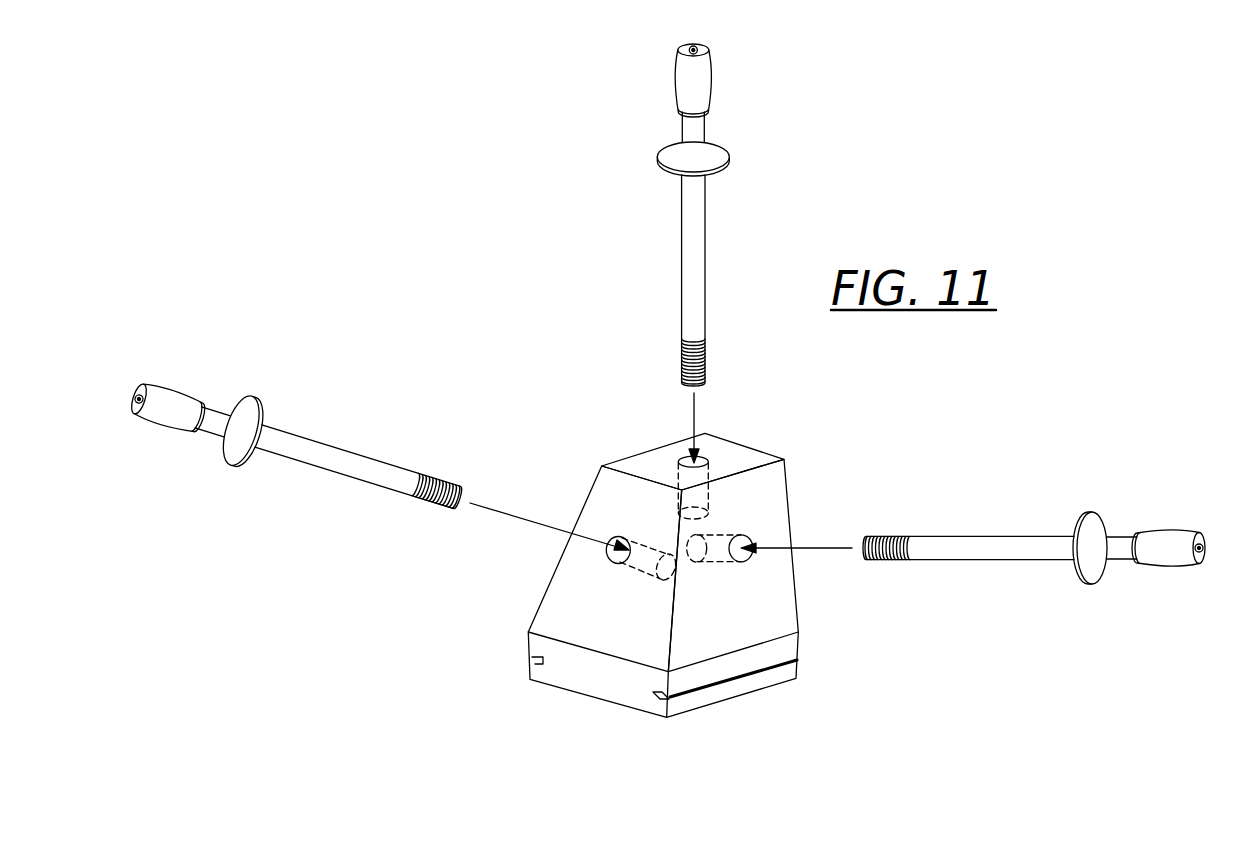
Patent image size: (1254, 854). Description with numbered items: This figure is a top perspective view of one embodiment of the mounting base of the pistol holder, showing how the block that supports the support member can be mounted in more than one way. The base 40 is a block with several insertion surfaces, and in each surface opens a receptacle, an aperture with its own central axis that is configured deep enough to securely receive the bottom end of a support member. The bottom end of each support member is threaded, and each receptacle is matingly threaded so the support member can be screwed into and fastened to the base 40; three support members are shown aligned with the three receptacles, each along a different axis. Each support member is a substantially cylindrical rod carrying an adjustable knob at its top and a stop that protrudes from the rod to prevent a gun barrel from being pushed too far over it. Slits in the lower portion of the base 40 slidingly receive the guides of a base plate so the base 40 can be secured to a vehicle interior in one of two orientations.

The base 40 is at (661, 570).